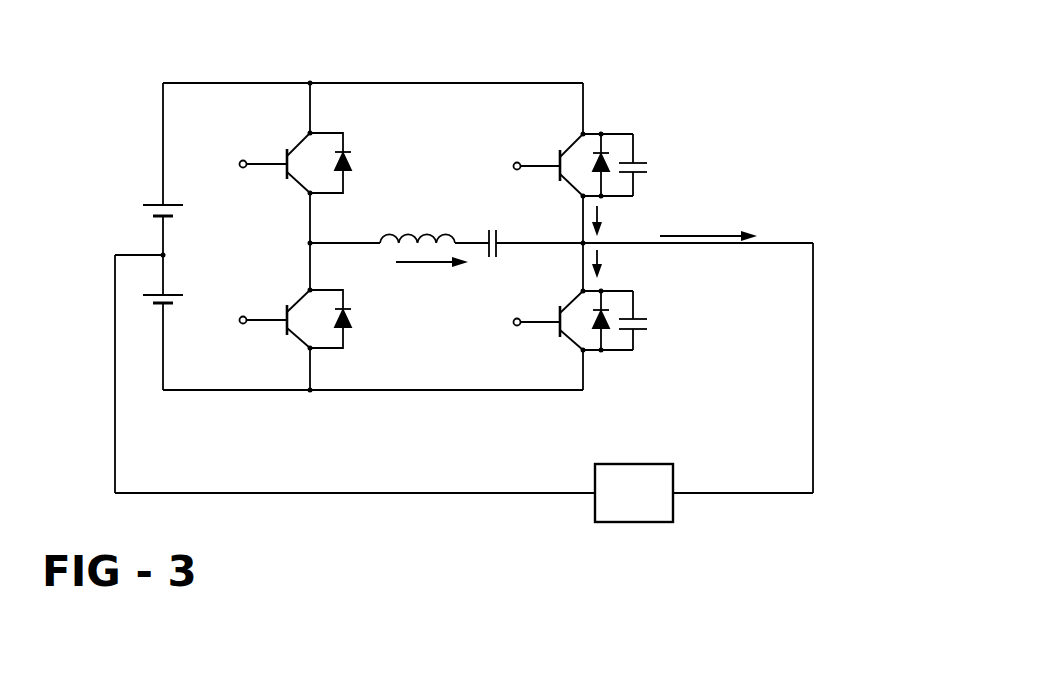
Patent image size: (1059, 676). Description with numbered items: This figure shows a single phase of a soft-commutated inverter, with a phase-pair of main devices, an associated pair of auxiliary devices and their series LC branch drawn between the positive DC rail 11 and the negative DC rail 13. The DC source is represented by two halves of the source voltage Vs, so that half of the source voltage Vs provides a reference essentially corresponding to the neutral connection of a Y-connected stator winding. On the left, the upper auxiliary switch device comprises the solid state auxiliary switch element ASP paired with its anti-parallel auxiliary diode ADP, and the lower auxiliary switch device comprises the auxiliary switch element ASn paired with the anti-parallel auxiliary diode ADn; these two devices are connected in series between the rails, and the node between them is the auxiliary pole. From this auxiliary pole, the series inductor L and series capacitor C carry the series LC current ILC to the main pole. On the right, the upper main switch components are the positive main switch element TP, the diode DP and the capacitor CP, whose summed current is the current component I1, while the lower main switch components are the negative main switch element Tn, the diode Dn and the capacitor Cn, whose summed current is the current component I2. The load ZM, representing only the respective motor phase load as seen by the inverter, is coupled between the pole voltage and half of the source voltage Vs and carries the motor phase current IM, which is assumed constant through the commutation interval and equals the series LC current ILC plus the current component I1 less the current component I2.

The positive DC rail 11 is at (180, 83).
The negative DC rail 13 is at (247, 390).
The source voltage Vs is at (113, 261).
The series inductor L is at (428, 233).
The series capacitor C is at (495, 230).
The load ZM is at (634, 493).
The positive auxiliary switch element ASP is at (298, 142).
The positive anti-parallel auxiliary diode ADP is at (352, 160).
The negative auxiliary switch element ASn is at (297, 303).
The negative anti-parallel auxiliary diode ADn is at (350, 318).
The positive main switch element TP is at (575, 140).
The positive main diode DP is at (610, 157).
The positive main capacitor CP is at (642, 157).
The negative main switch element Tn is at (570, 342).
The negative main diode Dn is at (603, 333).
The negative main capacitor Cn is at (643, 332).
The series LC current ILC is at (420, 265).
The motor phase current IM is at (708, 235).
The upper current component I1 is at (602, 217).
The lower current component I2 is at (600, 255).